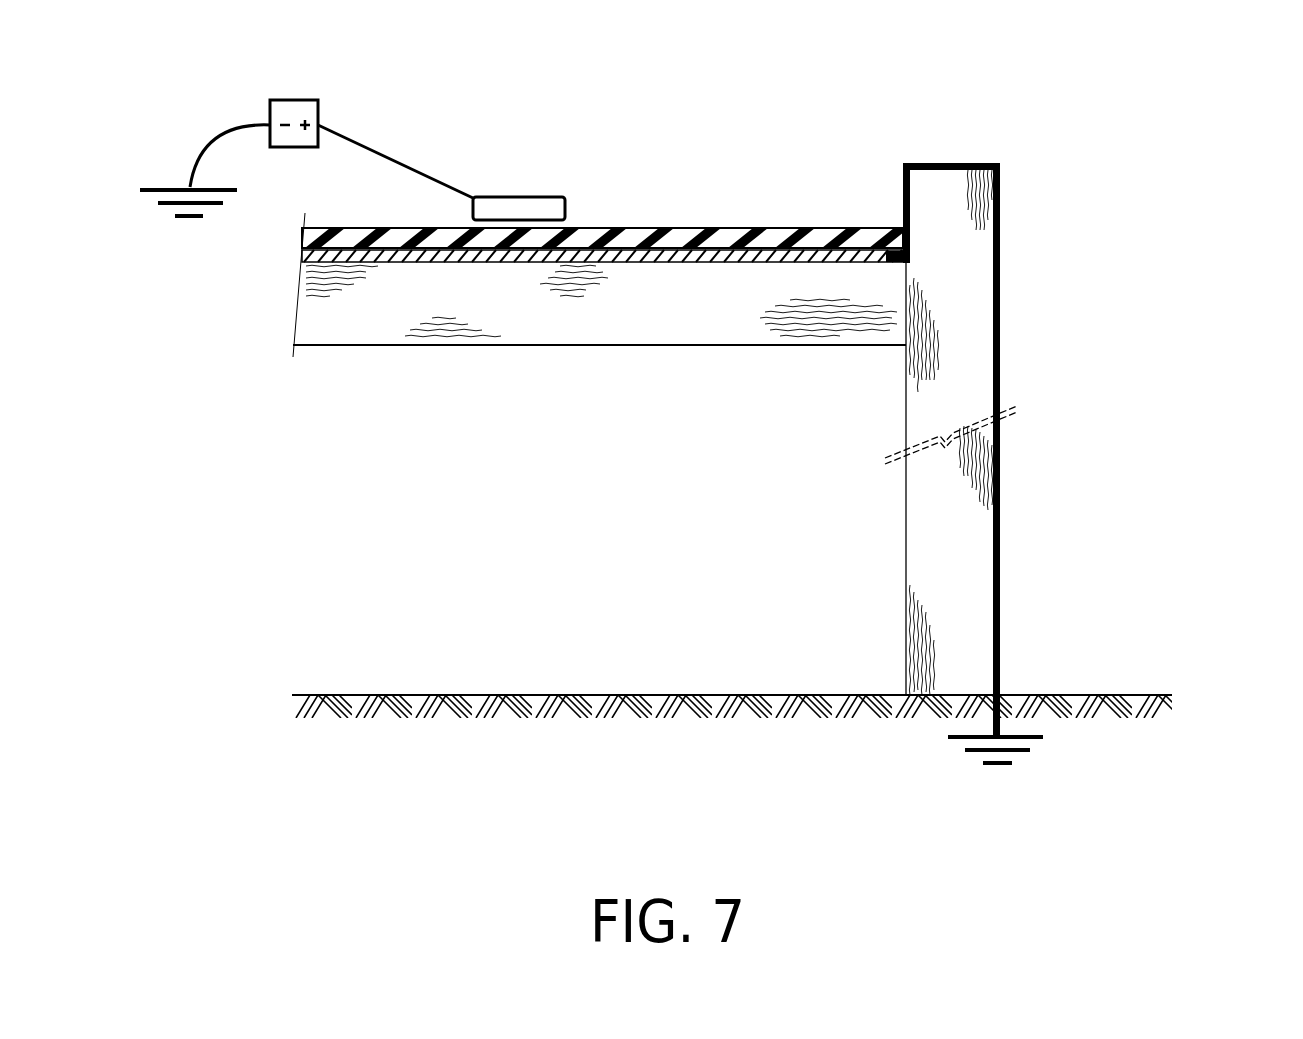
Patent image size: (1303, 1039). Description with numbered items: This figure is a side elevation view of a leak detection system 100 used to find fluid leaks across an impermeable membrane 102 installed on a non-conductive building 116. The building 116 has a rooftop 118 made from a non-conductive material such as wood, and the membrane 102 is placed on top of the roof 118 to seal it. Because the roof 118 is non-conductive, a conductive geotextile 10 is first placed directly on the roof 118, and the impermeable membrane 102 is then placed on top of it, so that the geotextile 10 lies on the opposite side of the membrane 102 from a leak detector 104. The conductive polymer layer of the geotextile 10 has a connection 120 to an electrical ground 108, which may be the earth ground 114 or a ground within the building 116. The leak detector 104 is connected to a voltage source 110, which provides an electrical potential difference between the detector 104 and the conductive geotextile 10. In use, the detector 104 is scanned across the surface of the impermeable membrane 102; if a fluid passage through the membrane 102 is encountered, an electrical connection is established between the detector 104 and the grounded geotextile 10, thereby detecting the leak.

The conductive geotextile 10 is at (310, 257).
The leak detection system 100 is at (1108, 98).
The impermeable membrane 102 is at (740, 230).
The leak detector 104 is at (508, 197).
The electrical ground 108 is at (178, 187).
The voltage source 110 is at (298, 100).
The ground 114 is at (1090, 690).
The building 116 is at (973, 377).
The rooftop 118 is at (562, 330).
The connection 120 is at (1000, 217).